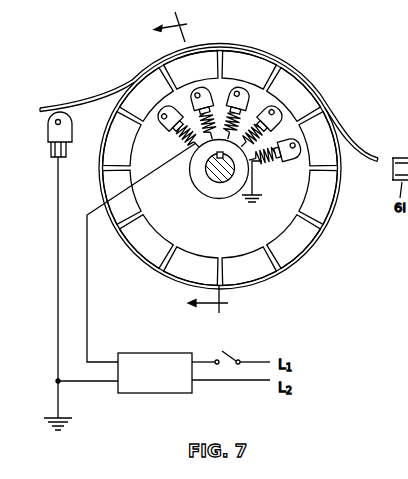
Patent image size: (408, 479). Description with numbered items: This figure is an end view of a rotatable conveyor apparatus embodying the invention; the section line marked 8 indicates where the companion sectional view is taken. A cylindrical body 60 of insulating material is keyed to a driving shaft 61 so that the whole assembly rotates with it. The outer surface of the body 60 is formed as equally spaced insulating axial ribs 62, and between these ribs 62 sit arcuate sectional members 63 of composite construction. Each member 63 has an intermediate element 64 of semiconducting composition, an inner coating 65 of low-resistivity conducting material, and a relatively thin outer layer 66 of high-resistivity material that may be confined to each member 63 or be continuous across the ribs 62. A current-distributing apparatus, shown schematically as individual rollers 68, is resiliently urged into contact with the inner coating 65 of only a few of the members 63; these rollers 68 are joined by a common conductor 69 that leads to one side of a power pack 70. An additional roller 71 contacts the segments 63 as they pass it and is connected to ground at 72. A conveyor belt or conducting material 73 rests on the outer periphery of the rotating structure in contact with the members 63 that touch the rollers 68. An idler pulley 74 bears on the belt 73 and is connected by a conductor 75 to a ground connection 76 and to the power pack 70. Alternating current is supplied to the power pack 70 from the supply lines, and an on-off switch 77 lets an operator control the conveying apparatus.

The section line 8- 8 is at (191, 169).
The cylindrical body 60 is at (269, 228).
The driving shaft 61 is at (221, 179).
The insulating axial ribs 62 is at (265, 266).
The arcuate sectional members 63 is at (307, 256).
The intermediate element 64 is at (323, 195).
The inner coating 65 is at (202, 250).
The outer layer 66 is at (258, 284).
The rollers 68 is at (164, 120).
The common conductor 69 is at (160, 172).
The power pack 70 is at (180, 372).
The additional roller 71 is at (300, 148).
The ground 72 is at (257, 194).
The conveyor belt or conducting material 73 is at (88, 105).
The idler pulley 74 is at (70, 114).
The conductor 75 is at (59, 196).
The ground connection 76 is at (60, 416).
The on-off switch 77 is at (226, 353).